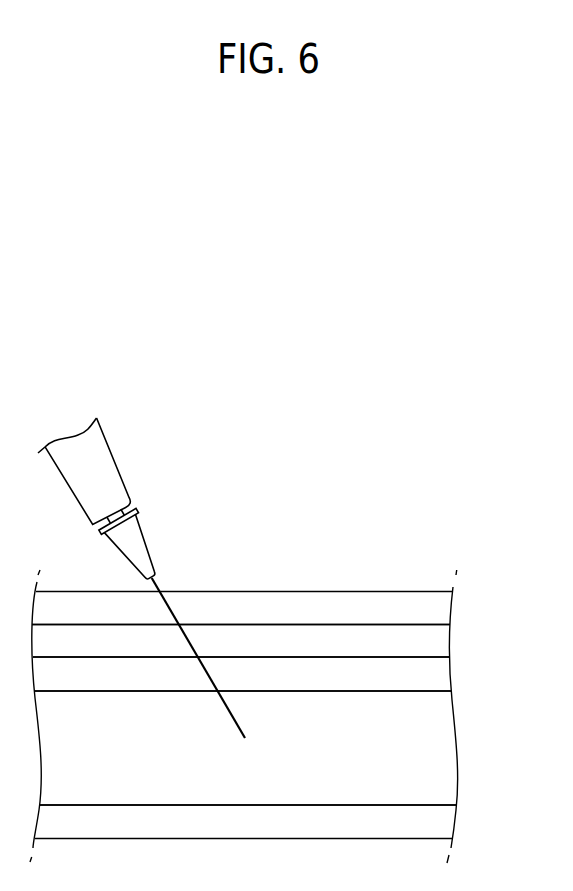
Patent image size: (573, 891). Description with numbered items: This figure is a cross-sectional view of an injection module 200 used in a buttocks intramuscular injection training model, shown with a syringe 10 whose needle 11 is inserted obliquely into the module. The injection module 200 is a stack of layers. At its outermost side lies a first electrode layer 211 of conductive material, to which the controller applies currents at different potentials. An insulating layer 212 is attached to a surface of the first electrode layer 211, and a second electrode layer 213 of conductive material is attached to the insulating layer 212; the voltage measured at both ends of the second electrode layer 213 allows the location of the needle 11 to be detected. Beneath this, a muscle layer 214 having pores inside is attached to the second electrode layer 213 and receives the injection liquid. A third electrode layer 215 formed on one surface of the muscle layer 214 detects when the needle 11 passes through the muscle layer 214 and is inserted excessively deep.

The syringe 10 is at (108, 457).
The needle 11 is at (170, 610).
The injection module 200 is at (356, 575).
The first electrode layer 211 is at (438, 609).
The insulating layer 212 is at (438, 642).
The second electrode layer 213 is at (438, 675).
The muscle layer 214 is at (445, 750).
The third electrode layer 215 is at (447, 825).